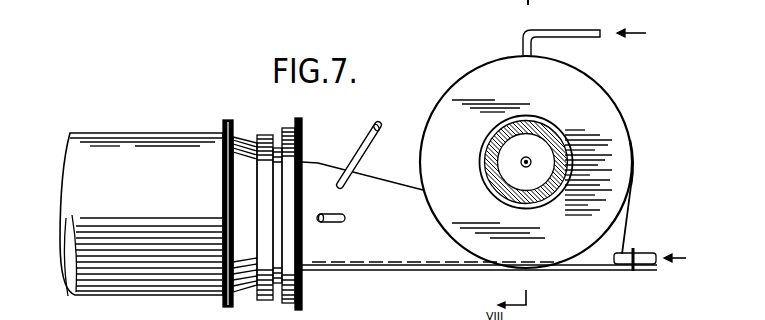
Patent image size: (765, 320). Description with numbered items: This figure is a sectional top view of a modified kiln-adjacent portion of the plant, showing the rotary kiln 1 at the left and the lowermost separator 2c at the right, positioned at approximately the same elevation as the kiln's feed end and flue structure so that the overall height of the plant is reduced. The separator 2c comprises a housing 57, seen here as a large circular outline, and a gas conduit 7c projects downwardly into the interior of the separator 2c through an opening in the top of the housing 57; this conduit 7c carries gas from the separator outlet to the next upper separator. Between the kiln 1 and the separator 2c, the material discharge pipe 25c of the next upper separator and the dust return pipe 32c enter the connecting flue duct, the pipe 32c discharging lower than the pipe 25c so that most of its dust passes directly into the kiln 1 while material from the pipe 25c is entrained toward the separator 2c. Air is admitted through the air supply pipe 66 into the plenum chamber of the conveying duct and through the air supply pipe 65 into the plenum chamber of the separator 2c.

The rotary kiln 1 is at (159, 133).
The lowermost separator 2c is at (628, 108).
The gas conduit 7c is at (483, 151).
The material discharge pipe 25c is at (335, 222).
The dust return pipe 32c is at (366, 141).
The housing 57 is at (634, 144).
The air supply pipe 65 is at (596, 30).
The air supply pipe 66 is at (645, 251).